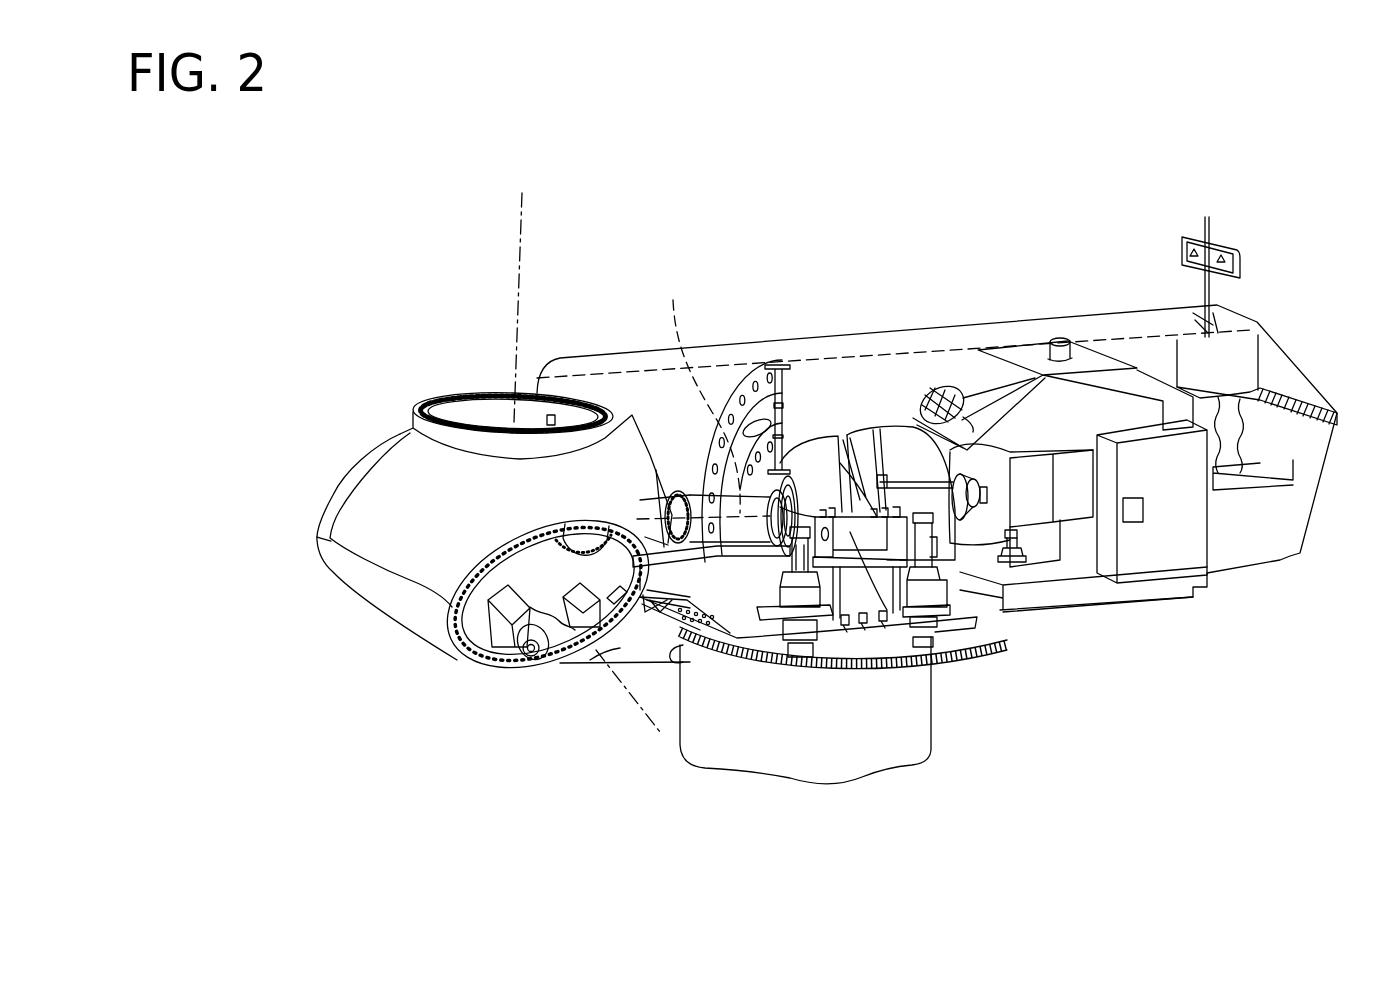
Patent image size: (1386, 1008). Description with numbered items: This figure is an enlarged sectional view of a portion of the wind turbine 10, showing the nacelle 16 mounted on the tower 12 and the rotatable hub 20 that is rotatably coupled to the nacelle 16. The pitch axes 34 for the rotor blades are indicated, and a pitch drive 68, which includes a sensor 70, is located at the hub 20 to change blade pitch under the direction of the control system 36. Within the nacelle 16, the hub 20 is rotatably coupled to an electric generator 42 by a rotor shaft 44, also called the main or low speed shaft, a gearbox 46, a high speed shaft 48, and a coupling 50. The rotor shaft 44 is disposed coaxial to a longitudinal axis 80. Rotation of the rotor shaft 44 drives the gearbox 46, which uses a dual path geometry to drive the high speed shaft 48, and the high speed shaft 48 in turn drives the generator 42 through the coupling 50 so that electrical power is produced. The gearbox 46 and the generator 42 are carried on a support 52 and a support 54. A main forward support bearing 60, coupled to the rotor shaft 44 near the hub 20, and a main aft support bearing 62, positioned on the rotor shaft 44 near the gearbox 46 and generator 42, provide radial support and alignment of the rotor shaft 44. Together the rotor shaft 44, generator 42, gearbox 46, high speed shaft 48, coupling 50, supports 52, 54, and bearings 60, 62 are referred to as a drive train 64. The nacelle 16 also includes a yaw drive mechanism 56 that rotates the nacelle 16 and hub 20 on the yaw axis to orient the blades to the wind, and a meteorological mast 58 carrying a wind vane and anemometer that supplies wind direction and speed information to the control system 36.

The wind turbine 10 is at (343, 266).
The tower 12 is at (860, 768).
The nacelle 16 is at (915, 273).
The hub 20 is at (300, 524).
The pitch axis 34 is at (522, 215).
The control system 36 is at (1143, 457).
The electric generator 42 is at (1033, 540).
The rotor shaft 44 is at (715, 492).
The gearbox 46 is at (880, 428).
The high speed shaft 48 is at (985, 598).
The coupling 50 is at (973, 465).
The support 52 is at (903, 618).
The support 54 is at (1000, 540).
The yaw drive mechanism 56 is at (793, 637).
The meteorological mast 58 is at (1240, 256).
The main forward support bearing 60 is at (680, 548).
The main aft support bearing 62 is at (830, 445).
The drive train 64 is at (741, 416).
The pitch drive 68 is at (487, 620).
The sensor 70 is at (615, 632).
The longitudinal axis 80 is at (697, 393).